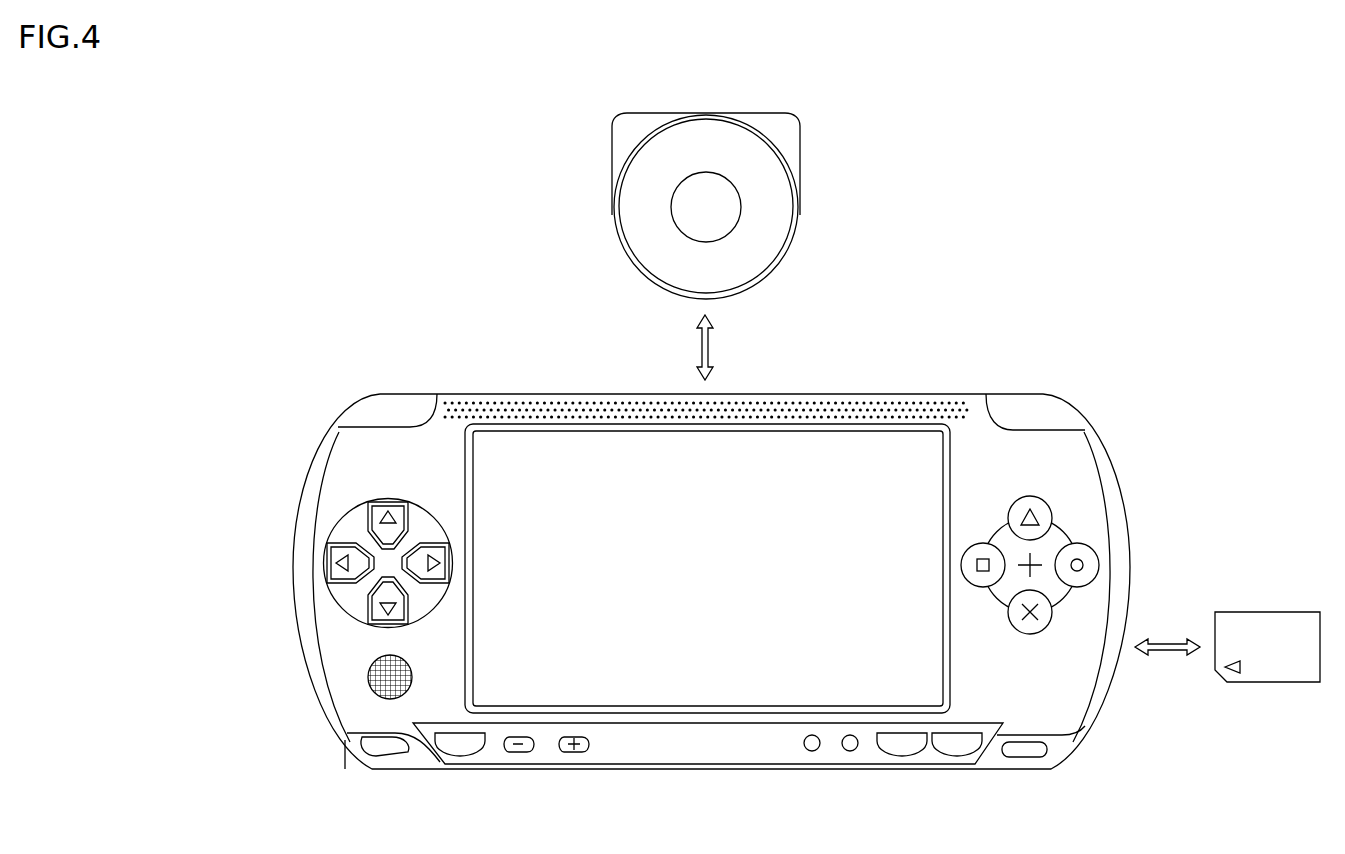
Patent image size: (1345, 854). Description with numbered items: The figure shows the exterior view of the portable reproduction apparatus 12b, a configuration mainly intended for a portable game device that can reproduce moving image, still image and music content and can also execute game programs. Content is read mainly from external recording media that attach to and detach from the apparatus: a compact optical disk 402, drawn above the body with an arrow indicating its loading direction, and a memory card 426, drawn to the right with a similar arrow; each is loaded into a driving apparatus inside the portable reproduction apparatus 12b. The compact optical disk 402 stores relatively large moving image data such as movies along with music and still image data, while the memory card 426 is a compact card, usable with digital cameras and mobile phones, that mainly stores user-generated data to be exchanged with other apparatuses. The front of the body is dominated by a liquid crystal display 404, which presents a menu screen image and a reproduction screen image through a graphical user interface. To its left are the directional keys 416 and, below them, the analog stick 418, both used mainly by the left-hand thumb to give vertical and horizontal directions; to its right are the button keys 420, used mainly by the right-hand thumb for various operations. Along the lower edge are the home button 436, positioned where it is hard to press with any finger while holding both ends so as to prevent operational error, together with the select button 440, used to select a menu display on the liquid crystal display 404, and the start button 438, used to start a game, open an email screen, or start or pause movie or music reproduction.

The compact optical disk 402 is at (783, 135).
The portable reproduction apparatus 12b is at (591, 776).
The liquid crystal display 404 is at (695, 680).
The directional keys 416 is at (357, 598).
The analog stick 418 is at (367, 678).
The button keys 420 is at (1105, 495).
The memory card 426 is at (1262, 622).
The home button 436 is at (463, 747).
The start button 438 is at (957, 748).
The select button 440 is at (902, 748).